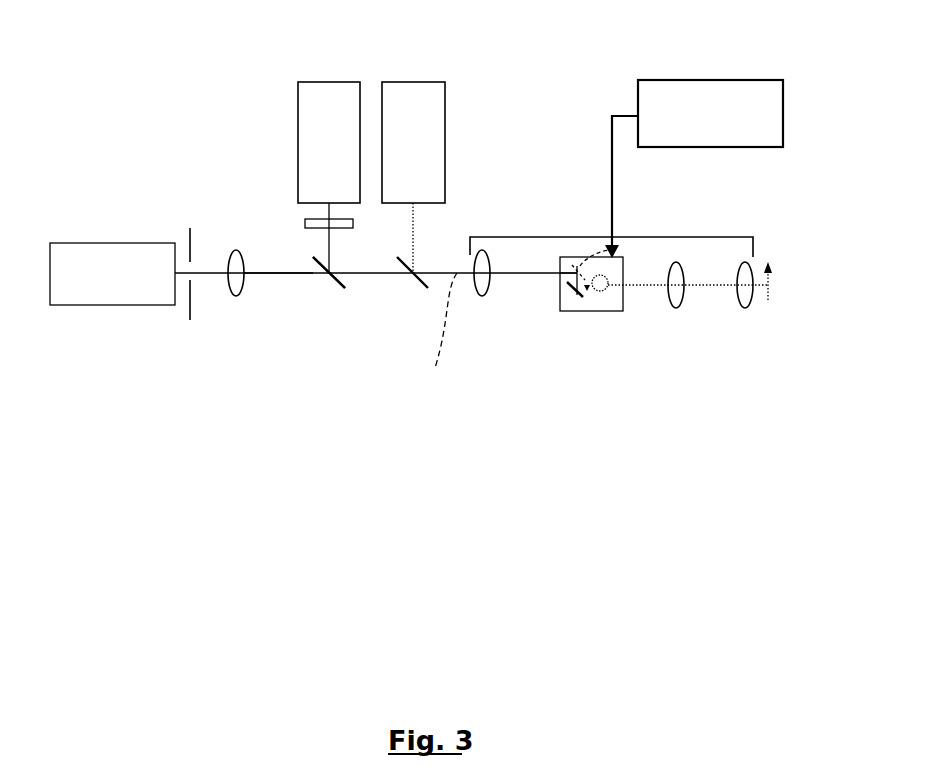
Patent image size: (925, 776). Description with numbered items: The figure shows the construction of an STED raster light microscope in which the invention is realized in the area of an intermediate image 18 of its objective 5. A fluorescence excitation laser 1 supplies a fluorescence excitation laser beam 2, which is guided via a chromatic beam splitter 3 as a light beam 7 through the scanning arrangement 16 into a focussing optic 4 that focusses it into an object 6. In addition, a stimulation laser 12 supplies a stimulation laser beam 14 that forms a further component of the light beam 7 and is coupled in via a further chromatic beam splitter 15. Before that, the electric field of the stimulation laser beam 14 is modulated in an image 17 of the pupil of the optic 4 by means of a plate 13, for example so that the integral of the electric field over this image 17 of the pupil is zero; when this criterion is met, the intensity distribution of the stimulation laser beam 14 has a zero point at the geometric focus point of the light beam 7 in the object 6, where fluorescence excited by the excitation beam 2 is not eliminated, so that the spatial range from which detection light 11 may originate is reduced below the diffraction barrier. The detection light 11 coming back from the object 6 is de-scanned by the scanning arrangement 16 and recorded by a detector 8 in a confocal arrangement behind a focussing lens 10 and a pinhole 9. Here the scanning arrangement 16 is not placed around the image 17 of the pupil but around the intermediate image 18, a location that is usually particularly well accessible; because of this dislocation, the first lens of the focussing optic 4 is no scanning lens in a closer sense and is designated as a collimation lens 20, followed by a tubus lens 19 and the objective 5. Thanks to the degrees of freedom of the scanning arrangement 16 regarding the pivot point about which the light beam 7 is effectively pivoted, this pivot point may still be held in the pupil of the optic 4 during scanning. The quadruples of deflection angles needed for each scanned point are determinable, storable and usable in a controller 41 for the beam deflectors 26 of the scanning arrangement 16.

The fluorescence excitation laser 1 is at (445, 127).
The fluorescence excitation laser beam 2 is at (417, 238).
The chromatic beam splitter 3 is at (433, 272).
The focussing optic 4 is at (633, 237).
The objective 5 is at (745, 308).
The object 6 is at (767, 292).
The light beam 7 is at (442, 335).
The detector 8 is at (98, 305).
The pinhole 9 is at (189, 320).
The focussing lens 10 is at (235, 297).
The detection light 11 is at (260, 275).
The stimulation laser 12 is at (297, 123).
The plate 13 is at (328, 251).
The stimulation laser beam 14 is at (325, 250).
The further chromatic beam splitter 15 is at (313, 257).
The scanning arrangement 16 is at (568, 300).
The image of the pupil 17 is at (328, 251).
The intermediate image 18 is at (587, 291).
The tubus lens 19 is at (677, 308).
The collimation lens 20 is at (482, 297).
The beam deflectors 26 is at (565, 292).
The controller 41 is at (710, 80).